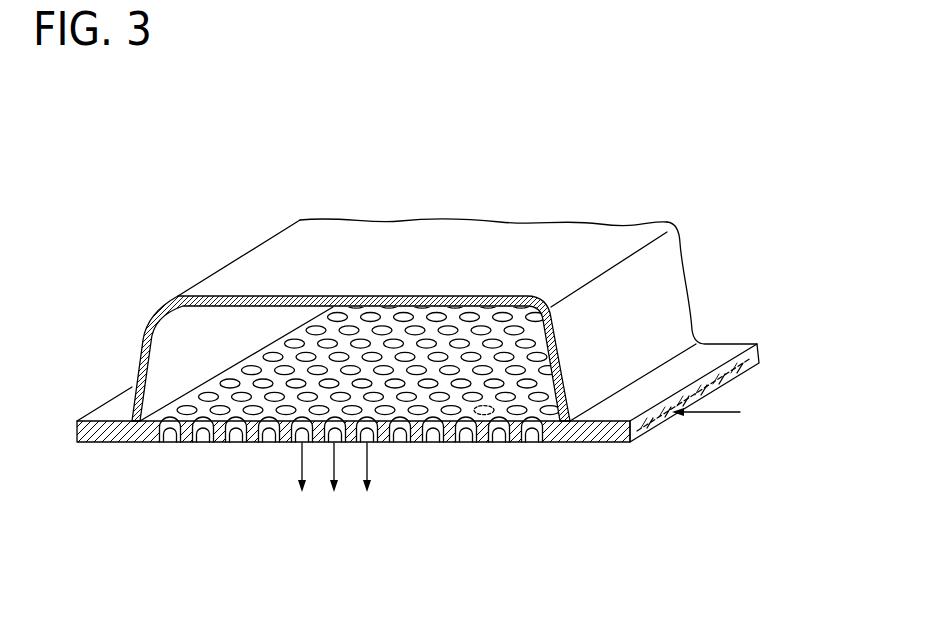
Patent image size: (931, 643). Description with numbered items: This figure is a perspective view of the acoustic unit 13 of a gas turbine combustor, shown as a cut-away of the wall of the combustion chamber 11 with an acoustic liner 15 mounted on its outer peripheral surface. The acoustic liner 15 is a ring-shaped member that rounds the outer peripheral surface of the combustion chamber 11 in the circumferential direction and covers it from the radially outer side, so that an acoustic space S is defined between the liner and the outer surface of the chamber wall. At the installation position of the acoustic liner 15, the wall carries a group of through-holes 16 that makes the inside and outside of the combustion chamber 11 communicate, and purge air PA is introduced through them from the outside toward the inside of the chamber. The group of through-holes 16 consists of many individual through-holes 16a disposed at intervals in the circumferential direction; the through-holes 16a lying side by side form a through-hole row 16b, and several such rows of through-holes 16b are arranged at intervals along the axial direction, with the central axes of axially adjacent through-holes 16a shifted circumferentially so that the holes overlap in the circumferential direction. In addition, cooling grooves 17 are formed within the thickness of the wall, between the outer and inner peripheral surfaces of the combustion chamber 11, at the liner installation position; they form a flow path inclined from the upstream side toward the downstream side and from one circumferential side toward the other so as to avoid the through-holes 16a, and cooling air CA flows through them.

The combustion chamber 11 is at (617, 433).
The acoustic unit 13 is at (98, 266).
The acoustic liner 15 is at (402, 243).
The group of through-holes 16 is at (595, 535).
The through-hole 16a is at (550, 383).
The through-hole row 16b is at (553, 362).
The cooling groove 17 is at (717, 382).
The acoustic space S is at (208, 325).
The purge air PA is at (302, 458).
The cooling air CA is at (713, 417).